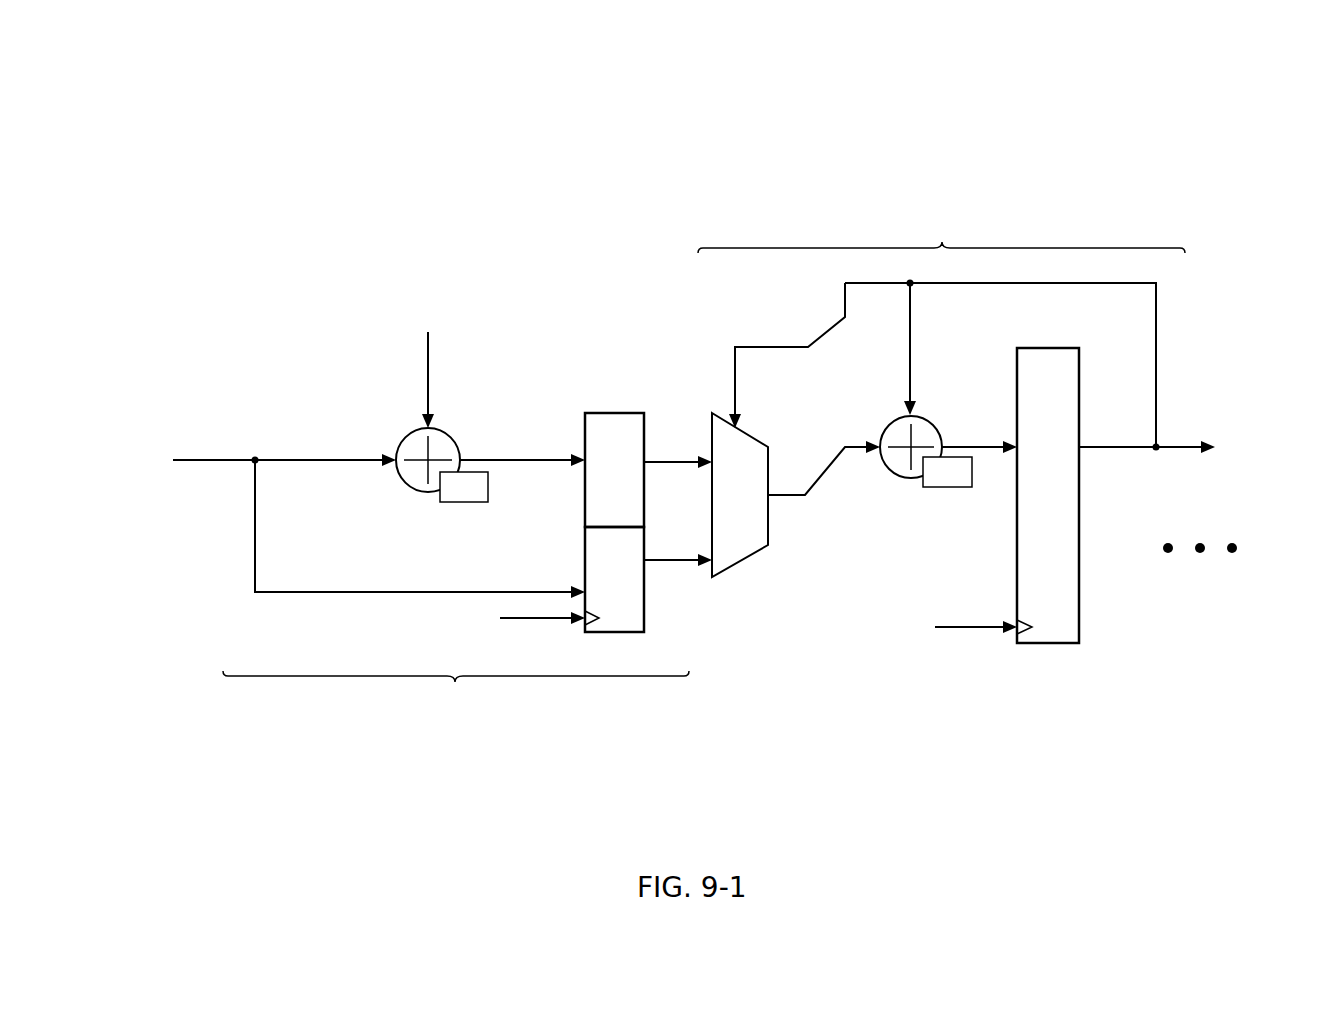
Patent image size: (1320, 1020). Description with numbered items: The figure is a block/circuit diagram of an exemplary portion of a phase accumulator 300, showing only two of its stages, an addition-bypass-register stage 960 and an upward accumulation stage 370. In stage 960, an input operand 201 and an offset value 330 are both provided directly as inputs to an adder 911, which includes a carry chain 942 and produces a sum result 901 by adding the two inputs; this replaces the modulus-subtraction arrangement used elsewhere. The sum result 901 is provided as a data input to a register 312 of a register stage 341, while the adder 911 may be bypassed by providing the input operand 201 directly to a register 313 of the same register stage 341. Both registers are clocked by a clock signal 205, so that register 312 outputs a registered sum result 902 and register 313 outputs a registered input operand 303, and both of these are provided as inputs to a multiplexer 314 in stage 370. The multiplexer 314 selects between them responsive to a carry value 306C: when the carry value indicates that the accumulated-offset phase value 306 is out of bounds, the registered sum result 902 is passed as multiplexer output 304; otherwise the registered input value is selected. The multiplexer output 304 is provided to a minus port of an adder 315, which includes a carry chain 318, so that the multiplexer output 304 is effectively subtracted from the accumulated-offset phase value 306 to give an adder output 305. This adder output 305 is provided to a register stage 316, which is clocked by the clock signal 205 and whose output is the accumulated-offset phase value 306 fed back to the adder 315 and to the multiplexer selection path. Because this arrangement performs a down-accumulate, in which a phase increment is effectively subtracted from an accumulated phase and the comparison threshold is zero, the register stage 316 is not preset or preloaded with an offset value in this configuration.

The phase accumulator 300 is at (1193, 124).
The input operand 201 is at (188, 460).
The offset value 330 is at (415, 363).
The adder 911 is at (404, 478).
The carry chain 942 is at (495, 502).
The sum result 901 is at (483, 460).
The register stage 341 is at (605, 412).
The register 312 is at (614, 470).
The register 313 is at (614, 579).
The registered sum result 902 is at (672, 458).
The registered input operand 303 is at (655, 562).
The clock signal 205 is at (500, 618).
The multiplexer 314 is at (752, 555).
The multiplexer output 304 is at (845, 447).
The carry value 306C is at (843, 293).
The adder 315 is at (883, 467).
The carry chain 318 is at (963, 488).
The adder output 305 is at (977, 443).
The register stage 316 is at (1017, 577).
The accumulated-offset phase value 306 is at (912, 320).
The upward accumulation stage 370 is at (941, 235).
The addition-bypass-register stage 960 is at (456, 694).